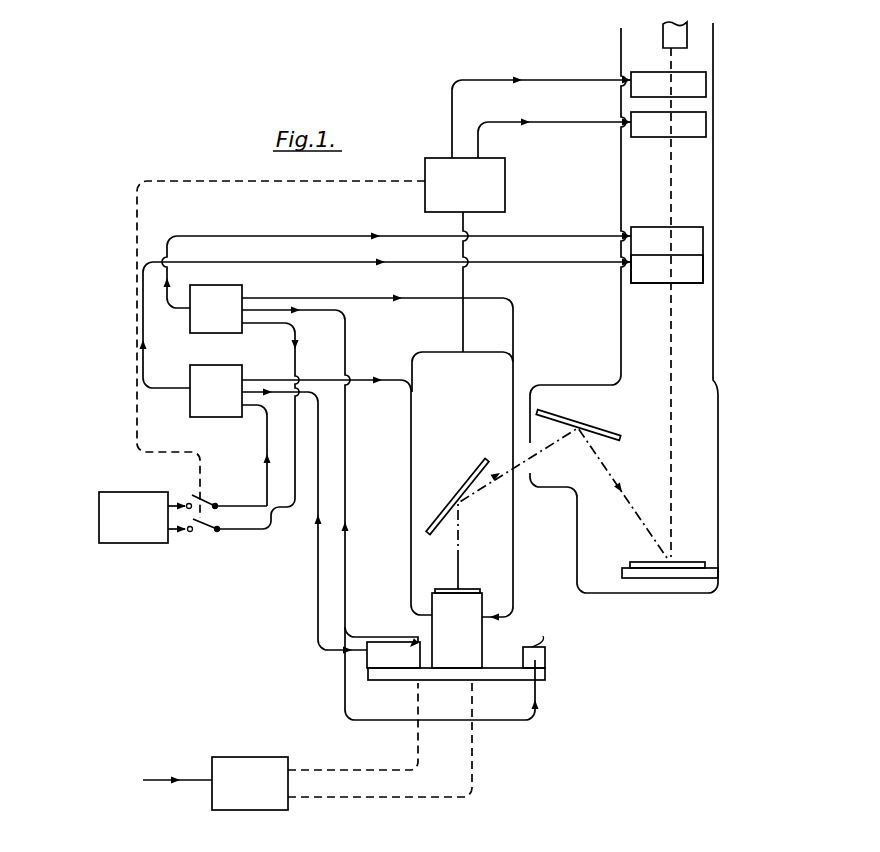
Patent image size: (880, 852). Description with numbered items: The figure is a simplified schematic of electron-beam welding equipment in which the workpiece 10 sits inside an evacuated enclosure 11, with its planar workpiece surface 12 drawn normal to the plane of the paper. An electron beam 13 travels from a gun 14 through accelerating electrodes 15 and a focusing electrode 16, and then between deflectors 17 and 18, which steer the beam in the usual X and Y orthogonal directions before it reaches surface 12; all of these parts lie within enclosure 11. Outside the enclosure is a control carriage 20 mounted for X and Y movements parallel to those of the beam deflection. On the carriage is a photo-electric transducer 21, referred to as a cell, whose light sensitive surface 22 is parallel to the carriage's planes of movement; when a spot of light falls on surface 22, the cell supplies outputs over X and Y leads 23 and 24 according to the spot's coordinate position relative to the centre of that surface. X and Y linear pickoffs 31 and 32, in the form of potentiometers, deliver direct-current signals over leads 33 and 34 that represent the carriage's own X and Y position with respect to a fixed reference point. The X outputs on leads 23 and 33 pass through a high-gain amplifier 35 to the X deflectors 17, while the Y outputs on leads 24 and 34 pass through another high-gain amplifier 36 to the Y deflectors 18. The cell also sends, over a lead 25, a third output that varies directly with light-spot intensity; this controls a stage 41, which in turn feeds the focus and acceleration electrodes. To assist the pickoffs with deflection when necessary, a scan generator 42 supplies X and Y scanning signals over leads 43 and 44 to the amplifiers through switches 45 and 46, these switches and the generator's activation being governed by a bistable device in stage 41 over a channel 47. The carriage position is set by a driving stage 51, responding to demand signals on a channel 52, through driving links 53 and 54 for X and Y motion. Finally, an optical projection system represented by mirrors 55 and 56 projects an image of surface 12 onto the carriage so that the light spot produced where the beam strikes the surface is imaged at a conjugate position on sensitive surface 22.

The workpiece 10 is at (642, 562).
The evacuated enclosure 11 is at (713, 323).
The workpiece surface 12 is at (680, 562).
The electron beam 13 is at (671, 473).
The gun 14 is at (663, 36).
The accelerating electrodes 15 is at (648, 72).
The focusing electrode 16 is at (660, 137).
The X deflectors 17 is at (685, 227).
The Y deflectors 18 is at (655, 283).
The control carriage 20 is at (545, 676).
The photo-electric transducer 21 is at (482, 655).
The light sensitive surface 22 is at (452, 588).
The X lead 23 is at (322, 298).
The Y lead 24 is at (360, 378).
The lead 25 is at (463, 320).
The X linear pickoff 31 is at (545, 656).
The Y linear pickoff 32 is at (343, 638).
The X lead 33 is at (345, 608).
The Y lead 34 is at (318, 610).
The high-gain amplifier 35 is at (190, 326).
The high-gain amplifier 36 is at (190, 412).
The stage 41 is at (507, 204).
The scan generator 42 is at (120, 543).
The lead 43 is at (247, 505).
The lead 44 is at (247, 530).
The switch 45 is at (188, 502).
The switch 46 is at (191, 532).
The channel 47 is at (201, 180).
The driving stage 51 is at (248, 757).
The channel 52 is at (150, 782).
The driving link 53 is at (380, 770).
The driving link 54 is at (385, 798).
The mirror 55 is at (606, 431).
The mirror 56 is at (457, 497).